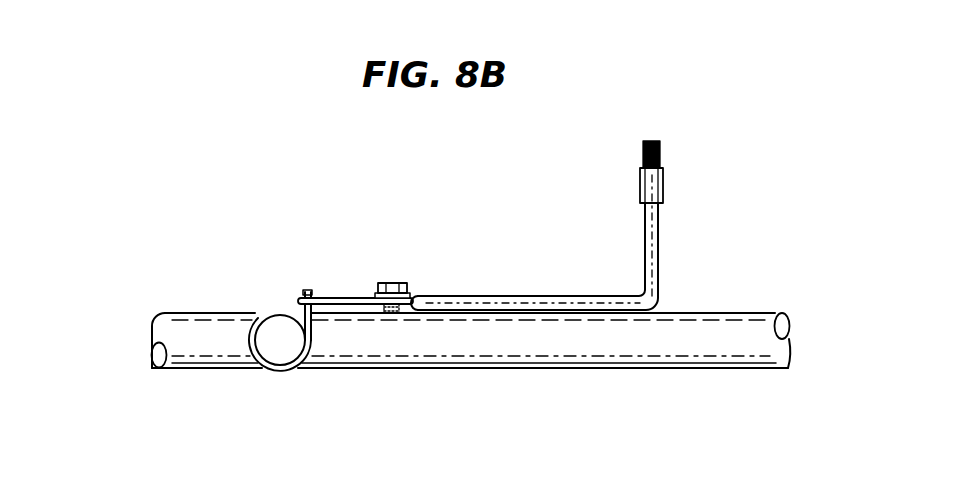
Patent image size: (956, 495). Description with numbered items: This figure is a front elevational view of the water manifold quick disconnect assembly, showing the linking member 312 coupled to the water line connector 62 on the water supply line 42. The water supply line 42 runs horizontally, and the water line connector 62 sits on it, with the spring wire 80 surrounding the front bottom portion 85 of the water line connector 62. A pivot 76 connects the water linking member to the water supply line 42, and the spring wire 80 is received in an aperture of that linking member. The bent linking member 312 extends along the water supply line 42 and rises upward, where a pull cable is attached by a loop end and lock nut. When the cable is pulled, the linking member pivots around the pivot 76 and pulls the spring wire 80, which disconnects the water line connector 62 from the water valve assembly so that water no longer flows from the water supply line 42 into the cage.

The water supply line 42 is at (206, 313).
The water line connector 62 is at (277, 317).
The pivot 76 is at (397, 284).
The spring wire 80 is at (285, 373).
The front bottom portion 85 is at (273, 349).
The linking member 312 is at (661, 184).